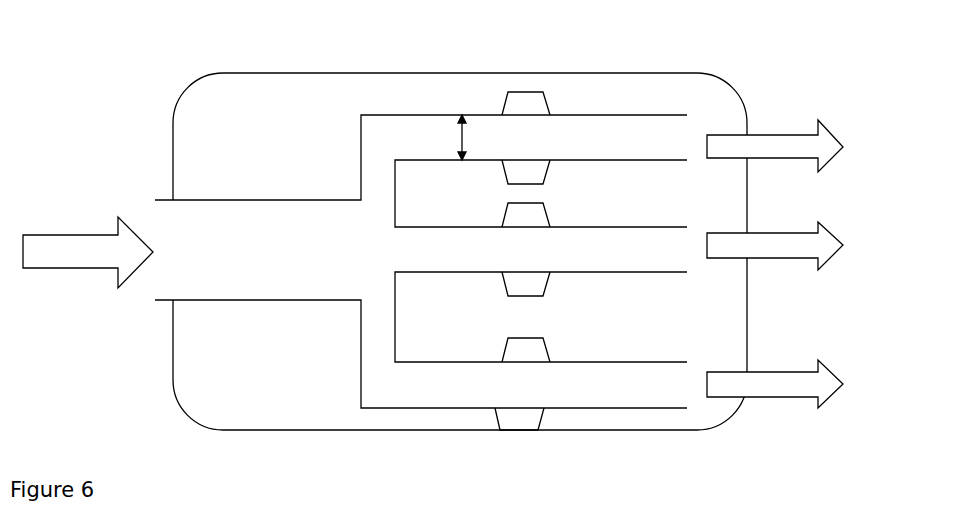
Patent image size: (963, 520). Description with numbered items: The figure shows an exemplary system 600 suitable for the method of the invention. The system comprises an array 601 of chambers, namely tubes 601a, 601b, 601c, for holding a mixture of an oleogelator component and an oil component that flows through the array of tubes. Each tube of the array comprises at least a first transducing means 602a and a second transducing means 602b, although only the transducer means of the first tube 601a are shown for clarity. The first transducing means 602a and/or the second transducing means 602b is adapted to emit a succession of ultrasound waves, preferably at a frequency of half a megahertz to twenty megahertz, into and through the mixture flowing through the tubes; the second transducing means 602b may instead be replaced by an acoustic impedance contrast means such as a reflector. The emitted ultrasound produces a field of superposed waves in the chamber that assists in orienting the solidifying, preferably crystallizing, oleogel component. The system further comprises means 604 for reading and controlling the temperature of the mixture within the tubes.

The system 600 is at (104, 41).
The means for reading and controlling the temperature 604 is at (257, 115).
The array of chambers 601 is at (421, 261).
The tube 601a is at (541, 137).
The tube 601b is at (541, 249).
The tube 601c is at (541, 385).
The first transducing means 602a is at (550, 102).
The second transducing means 602b is at (558, 172).